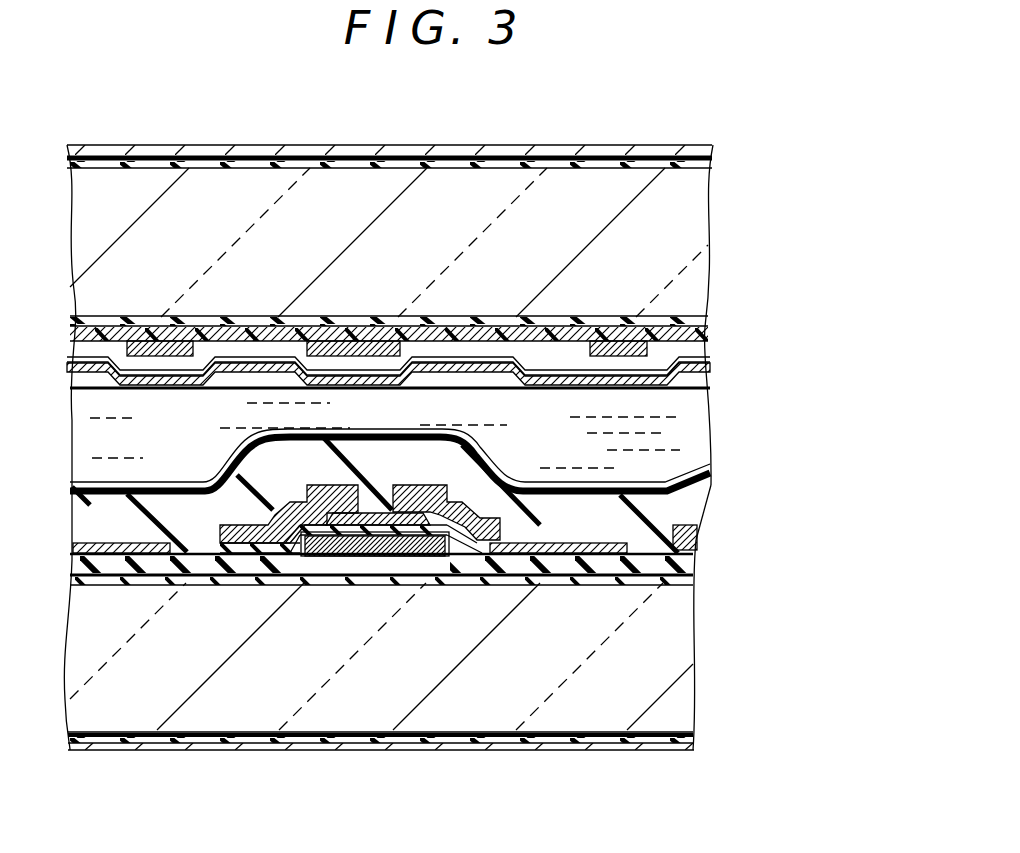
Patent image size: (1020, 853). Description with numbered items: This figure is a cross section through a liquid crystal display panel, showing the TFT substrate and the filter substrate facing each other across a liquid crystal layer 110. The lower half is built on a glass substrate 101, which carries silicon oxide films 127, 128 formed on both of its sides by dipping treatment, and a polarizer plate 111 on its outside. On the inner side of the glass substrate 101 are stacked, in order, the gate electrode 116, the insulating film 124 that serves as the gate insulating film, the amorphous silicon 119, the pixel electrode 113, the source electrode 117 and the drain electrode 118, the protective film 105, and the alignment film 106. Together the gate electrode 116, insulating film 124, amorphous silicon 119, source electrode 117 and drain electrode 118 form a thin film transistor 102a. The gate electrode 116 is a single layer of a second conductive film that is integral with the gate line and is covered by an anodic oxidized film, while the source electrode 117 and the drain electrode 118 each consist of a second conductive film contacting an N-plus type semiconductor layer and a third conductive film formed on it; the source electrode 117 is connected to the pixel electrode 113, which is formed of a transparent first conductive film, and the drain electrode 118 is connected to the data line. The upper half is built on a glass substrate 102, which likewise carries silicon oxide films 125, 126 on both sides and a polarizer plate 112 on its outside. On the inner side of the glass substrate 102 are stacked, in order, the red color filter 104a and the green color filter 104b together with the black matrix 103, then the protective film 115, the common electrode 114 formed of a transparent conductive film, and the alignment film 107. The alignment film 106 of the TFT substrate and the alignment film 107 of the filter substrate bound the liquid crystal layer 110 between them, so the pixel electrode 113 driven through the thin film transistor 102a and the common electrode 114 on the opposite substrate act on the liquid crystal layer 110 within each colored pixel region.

The glass substrate 101 is at (660, 660).
The glass substrate 102 is at (680, 205).
The thin film transistor TFT1 102a is at (360, 625).
The black matrix 103 is at (232, 341).
The color filter of R 104a is at (110, 327).
The color filter of G 104b is at (540, 327).
The protective film 105 is at (697, 502).
The alignment film 106 is at (712, 475).
The alignment film 107 is at (477, 390).
The liquid crystal layer 110 is at (683, 400).
The polarizer plate 111 is at (660, 750).
The polarizer plate 112 is at (680, 150).
The pixel electrode 113 is at (555, 553).
The common electrode 114 is at (337, 376).
The protective film 115 is at (707, 360).
The gate electrode 116 is at (362, 536).
The source electrode 117 is at (547, 535).
The drain electrode 118 is at (243, 545).
The amorphous silicon 119 is at (388, 526).
The insulating film 124 is at (677, 565).
The silicon oxide film 125 is at (710, 167).
The silicon oxide film 126 is at (707, 317).
The silicon oxide film 127 is at (683, 582).
The silicon oxide film 128 is at (677, 733).